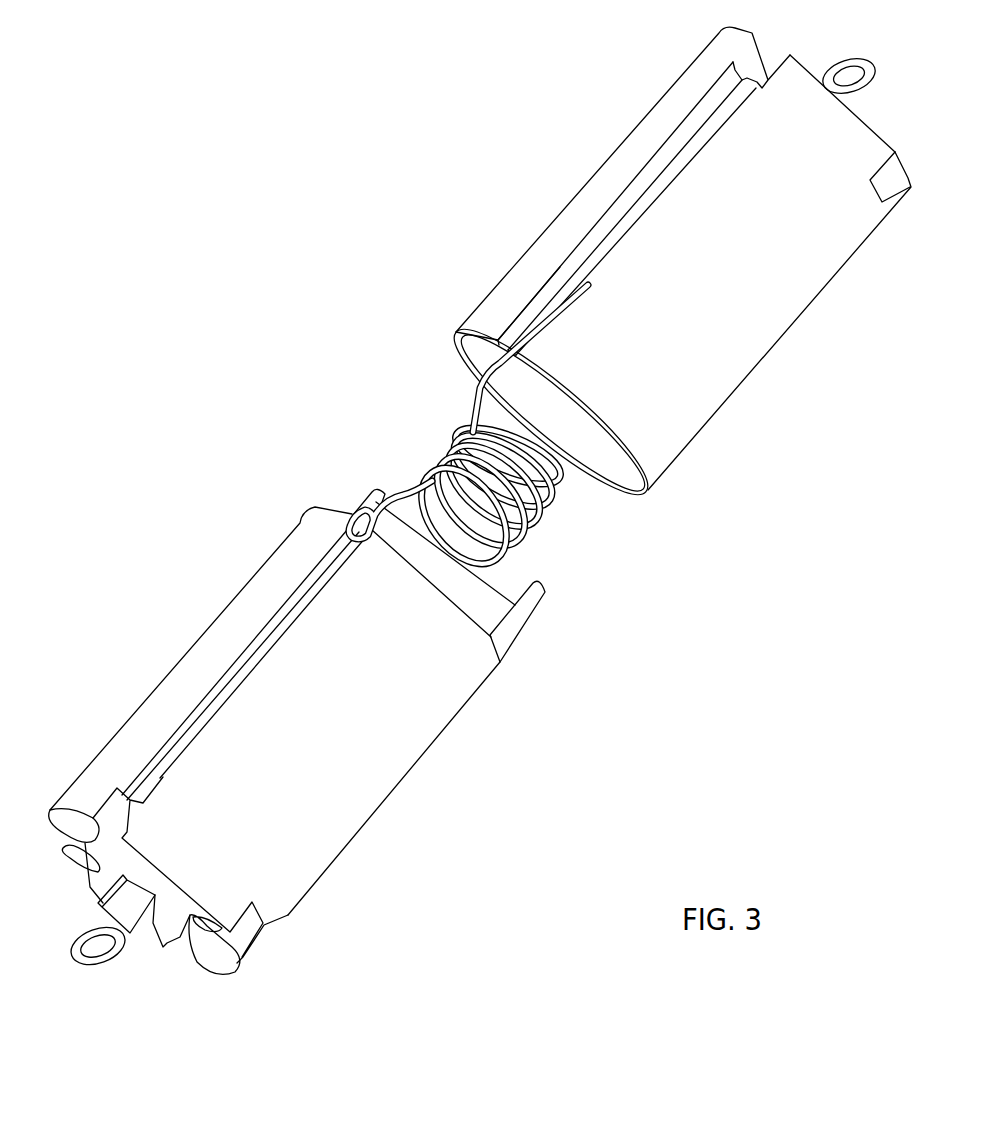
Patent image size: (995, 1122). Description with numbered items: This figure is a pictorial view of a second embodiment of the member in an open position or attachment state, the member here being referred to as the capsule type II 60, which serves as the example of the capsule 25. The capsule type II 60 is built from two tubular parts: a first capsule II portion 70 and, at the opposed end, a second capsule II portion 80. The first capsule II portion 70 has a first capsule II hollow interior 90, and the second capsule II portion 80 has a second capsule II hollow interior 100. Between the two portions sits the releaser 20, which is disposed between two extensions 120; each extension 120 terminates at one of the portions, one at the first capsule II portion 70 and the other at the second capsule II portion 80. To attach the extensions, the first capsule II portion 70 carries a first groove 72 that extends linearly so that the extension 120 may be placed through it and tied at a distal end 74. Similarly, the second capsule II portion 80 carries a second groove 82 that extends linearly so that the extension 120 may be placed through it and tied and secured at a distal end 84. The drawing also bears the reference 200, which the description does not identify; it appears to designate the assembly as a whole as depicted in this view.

The releaser 20 is at (437, 470).
The capsule 25 is at (805, 83).
The capsule type II 60 is at (308, 716).
The first capsule II portion 70 is at (308, 716).
The first groove 72 is at (369, 528).
The distal end 74 is at (95, 932).
The second capsule II portion 80 is at (674, 275).
The second groove 82 is at (527, 312).
The distal end 84 is at (870, 68).
The first capsule II hollow interior 90 is at (473, 592).
The second capsule II hollow interior 100 is at (587, 432).
The extension 120 is at (622, 220).
The implant assembly 200 is at (474, 492).